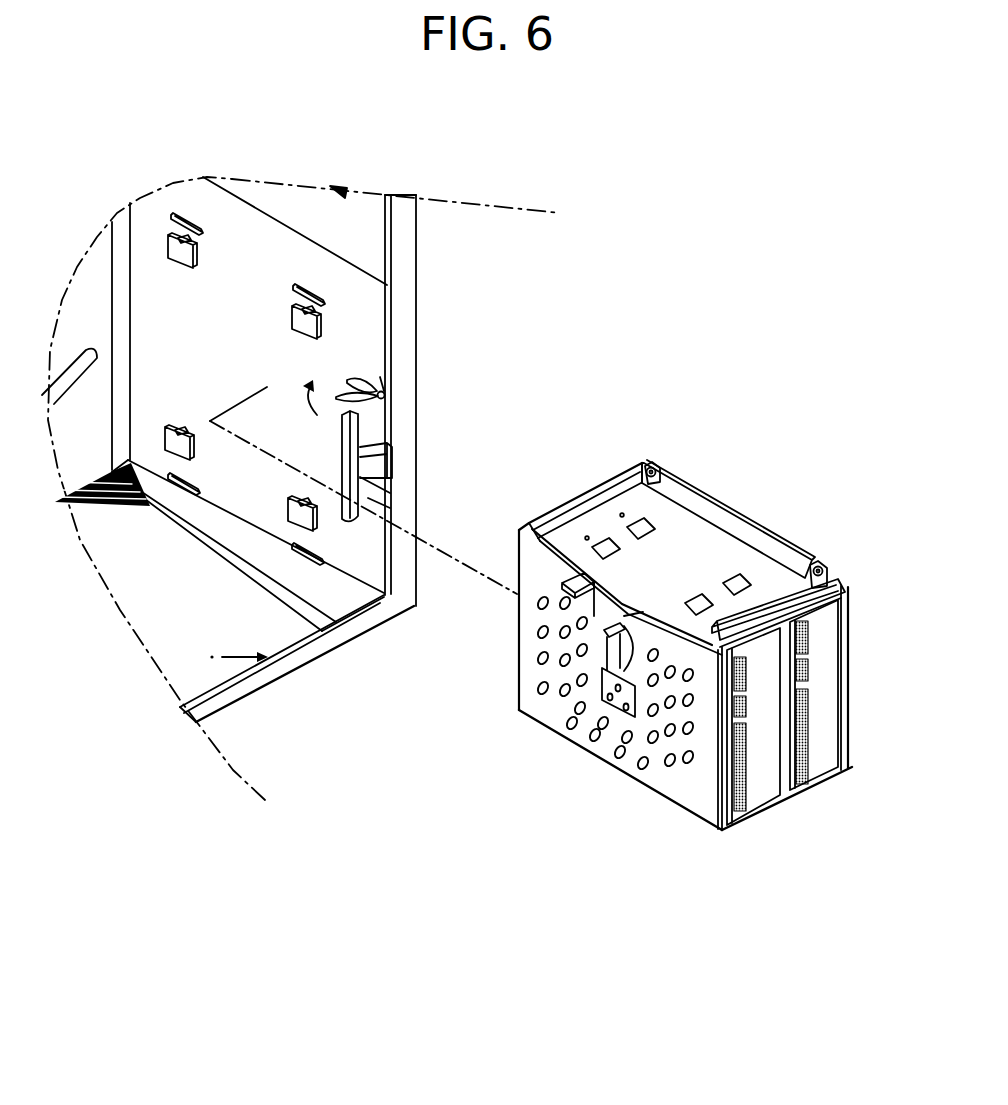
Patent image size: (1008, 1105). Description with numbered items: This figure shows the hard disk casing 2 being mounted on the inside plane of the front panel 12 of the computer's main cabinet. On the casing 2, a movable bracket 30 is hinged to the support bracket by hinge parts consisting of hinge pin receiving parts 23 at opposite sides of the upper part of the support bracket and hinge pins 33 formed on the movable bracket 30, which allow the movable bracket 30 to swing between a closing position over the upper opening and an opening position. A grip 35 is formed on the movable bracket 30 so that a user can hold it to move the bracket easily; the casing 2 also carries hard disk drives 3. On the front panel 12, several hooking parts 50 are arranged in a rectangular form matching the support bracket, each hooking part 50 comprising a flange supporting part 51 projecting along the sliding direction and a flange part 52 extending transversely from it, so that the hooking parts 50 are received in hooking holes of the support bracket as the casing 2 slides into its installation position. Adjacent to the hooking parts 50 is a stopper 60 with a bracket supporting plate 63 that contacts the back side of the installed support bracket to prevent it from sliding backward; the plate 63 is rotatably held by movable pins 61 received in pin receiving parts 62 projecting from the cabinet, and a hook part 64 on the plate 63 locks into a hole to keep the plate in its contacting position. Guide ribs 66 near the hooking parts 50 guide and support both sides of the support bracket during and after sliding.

The hard disk casing 2 is at (711, 644).
The electronic module 3 is at (820, 730).
The front panel 12 is at (188, 401).
The hinge pin receiving parts 23 is at (653, 468).
The movable bracket 30 is at (645, 622).
The hinge pins 33 is at (666, 478).
The grip 35 is at (580, 580).
The hooking part 50 is at (342, 389).
The flange supporting parts 51 is at (197, 233).
The flange parts 52 is at (187, 265).
The stopper 60 is at (427, 446).
The movable pins 61 is at (423, 395).
The pin receiving parts 62 is at (388, 378).
The bracket supporting plate 63 is at (368, 498).
The hook part 64 is at (393, 475).
The guide ribs 66 is at (304, 292).